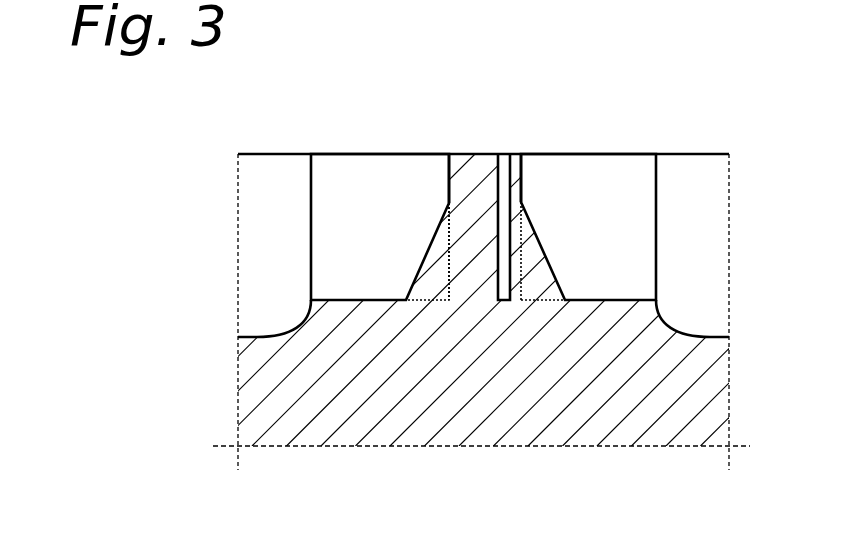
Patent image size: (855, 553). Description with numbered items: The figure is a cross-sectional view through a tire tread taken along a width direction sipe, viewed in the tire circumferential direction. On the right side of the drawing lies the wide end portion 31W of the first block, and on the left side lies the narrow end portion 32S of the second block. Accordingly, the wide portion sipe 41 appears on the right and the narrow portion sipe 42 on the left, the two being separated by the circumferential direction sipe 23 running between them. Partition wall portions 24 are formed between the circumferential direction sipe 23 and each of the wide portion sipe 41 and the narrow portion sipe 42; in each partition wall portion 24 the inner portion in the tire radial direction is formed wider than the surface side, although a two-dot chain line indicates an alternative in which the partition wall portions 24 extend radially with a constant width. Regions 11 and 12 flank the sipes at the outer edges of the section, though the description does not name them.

The first region 11 is at (708, 257).
The second region 12 is at (278, 259).
The circumferential direction sipe 23 is at (505, 300).
The partition wall portion 24 is at (475, 168).
The wide end portion 31W is at (628, 168).
The narrow end portion 32S is at (338, 172).
The wide portion sipe 41 is at (597, 230).
The narrow portion sipe 42 is at (378, 230).